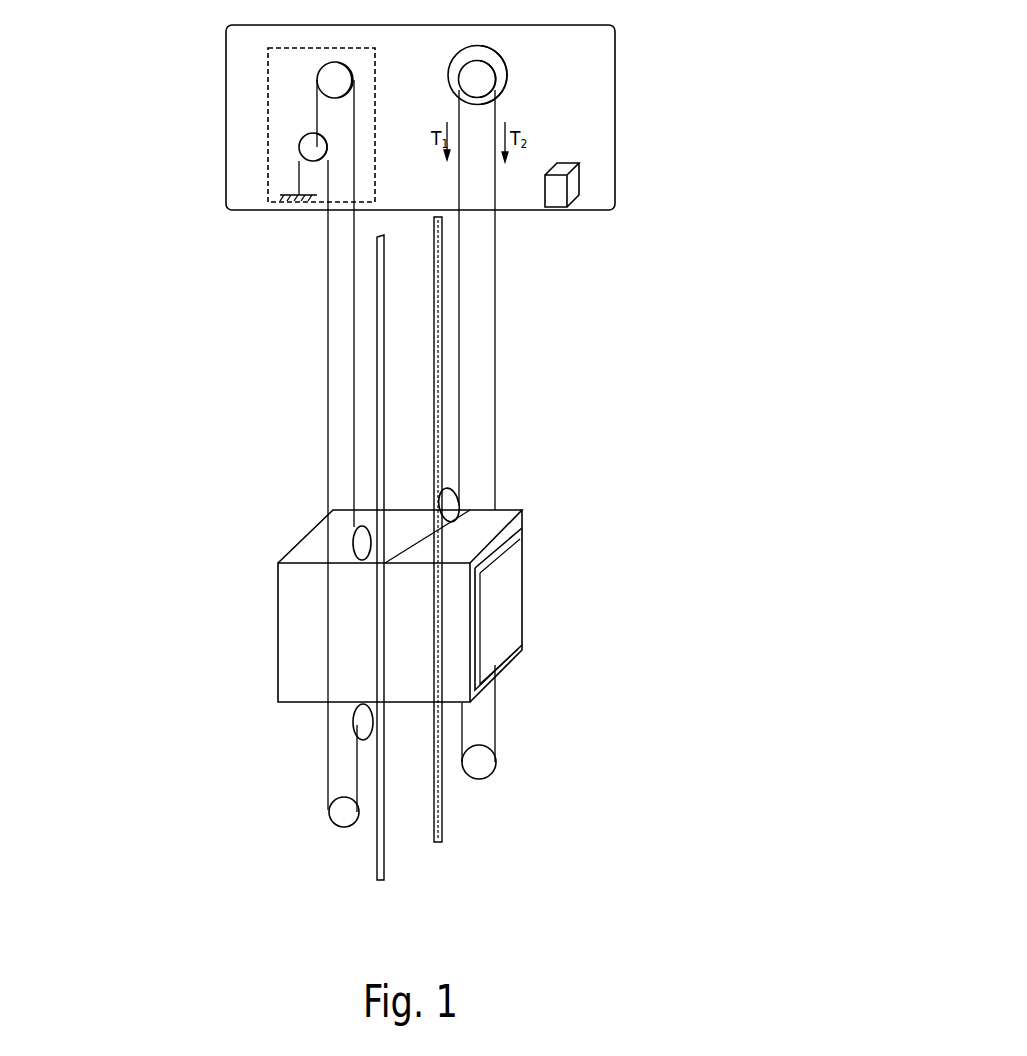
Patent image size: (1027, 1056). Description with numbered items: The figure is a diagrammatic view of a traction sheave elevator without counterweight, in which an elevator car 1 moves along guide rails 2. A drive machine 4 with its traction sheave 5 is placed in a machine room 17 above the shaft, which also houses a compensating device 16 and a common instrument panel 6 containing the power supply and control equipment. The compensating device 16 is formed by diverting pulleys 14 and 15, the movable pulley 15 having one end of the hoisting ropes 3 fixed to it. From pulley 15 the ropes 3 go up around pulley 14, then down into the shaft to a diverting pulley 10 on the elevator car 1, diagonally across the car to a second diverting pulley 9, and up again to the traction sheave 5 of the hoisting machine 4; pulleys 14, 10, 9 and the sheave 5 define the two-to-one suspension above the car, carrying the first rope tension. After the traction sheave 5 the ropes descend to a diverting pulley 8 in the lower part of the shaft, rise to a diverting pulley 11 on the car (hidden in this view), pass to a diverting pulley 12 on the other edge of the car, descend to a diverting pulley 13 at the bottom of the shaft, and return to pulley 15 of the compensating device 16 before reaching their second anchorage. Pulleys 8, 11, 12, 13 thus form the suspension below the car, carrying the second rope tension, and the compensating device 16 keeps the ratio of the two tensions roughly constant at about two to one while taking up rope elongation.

The elevator car 1 is at (493, 517).
The guide rails 2 is at (443, 836).
The hoisting ropes 3 is at (497, 463).
The drive machine 4 is at (498, 52).
The traction sheave 5 is at (480, 80).
The common instrument panel 6 is at (579, 188).
The diverting pulley 8 is at (479, 762).
The diverting pulley 9 is at (445, 505).
The diverting pulley 10 is at (357, 540).
The diverting pulley 11 is at (523, 622).
The diverting pulley 12 is at (355, 715).
The diverting pulley 13 is at (340, 815).
The diverting pulley 14 is at (330, 80).
The diverting pulley 15 is at (310, 148).
The compensating device 16 is at (268, 168).
The machine room 17 is at (610, 130).